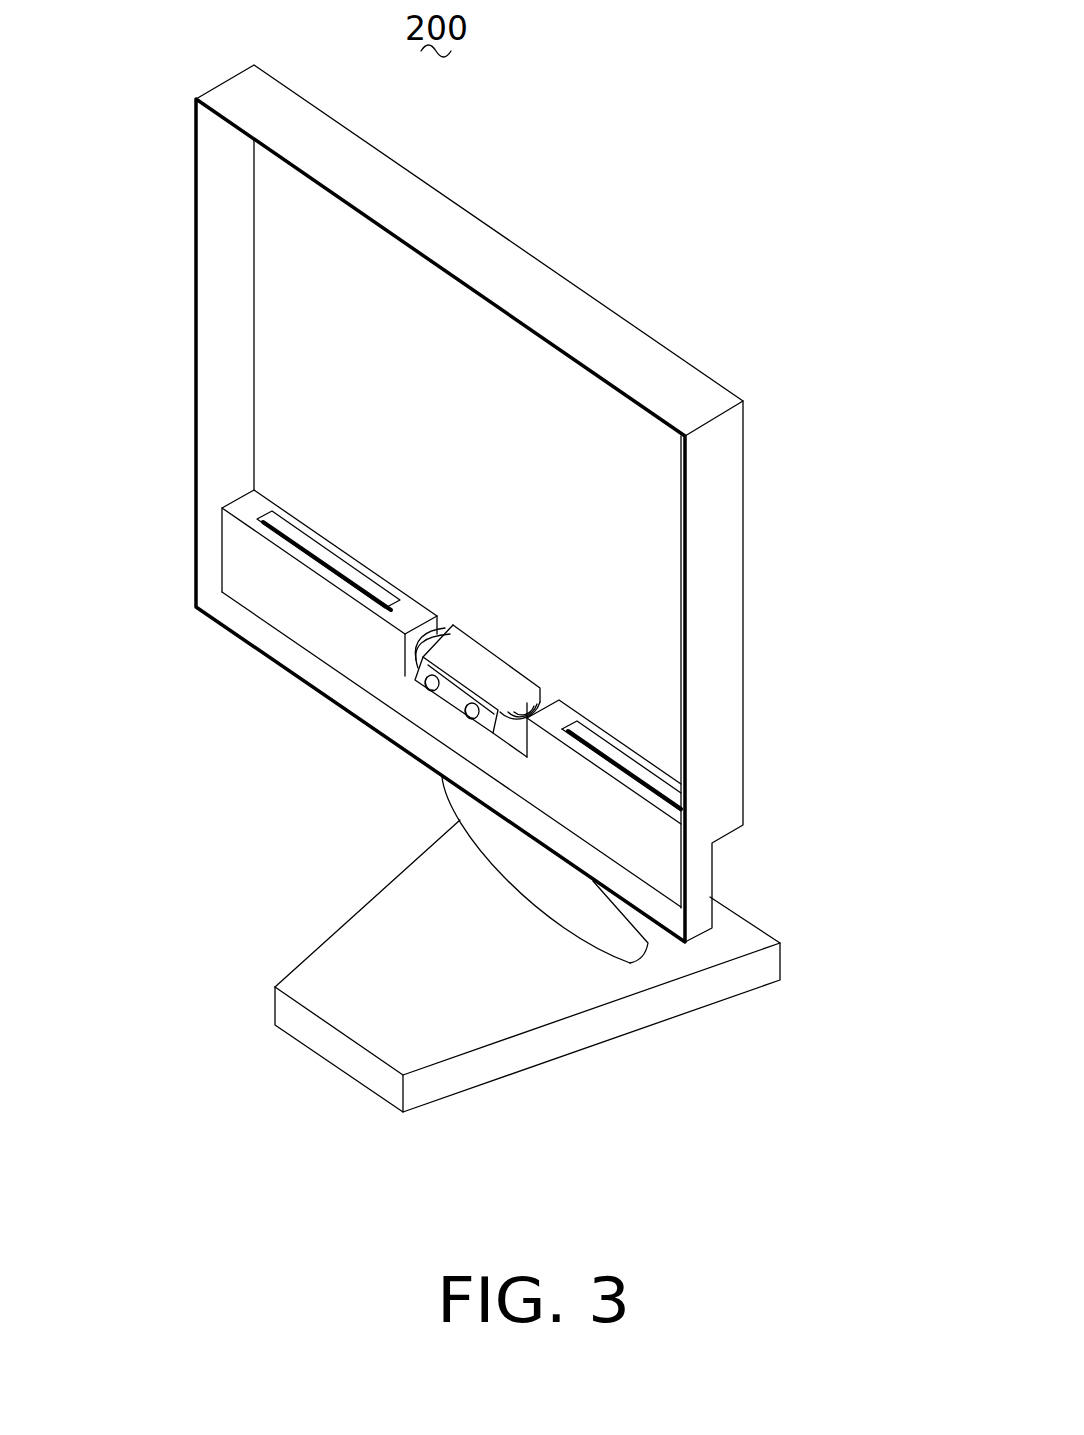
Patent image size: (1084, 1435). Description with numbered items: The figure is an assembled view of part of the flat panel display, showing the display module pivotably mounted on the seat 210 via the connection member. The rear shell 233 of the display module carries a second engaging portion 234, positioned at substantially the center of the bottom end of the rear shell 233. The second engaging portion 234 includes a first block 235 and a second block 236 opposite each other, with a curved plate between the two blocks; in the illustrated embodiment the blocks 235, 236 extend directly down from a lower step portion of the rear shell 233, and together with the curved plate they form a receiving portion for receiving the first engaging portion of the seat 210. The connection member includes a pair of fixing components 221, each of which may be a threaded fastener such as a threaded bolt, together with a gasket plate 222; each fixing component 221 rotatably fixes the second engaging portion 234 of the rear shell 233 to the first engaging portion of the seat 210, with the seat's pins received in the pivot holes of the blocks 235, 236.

The seat 210 is at (728, 942).
The fixing component 221 is at (494, 714).
The gasket plate 222 is at (465, 711).
The rear shell 233 is at (638, 369).
The second engaging portion 234 is at (494, 679).
The first block 235 is at (528, 712).
The second block 236 is at (450, 627).